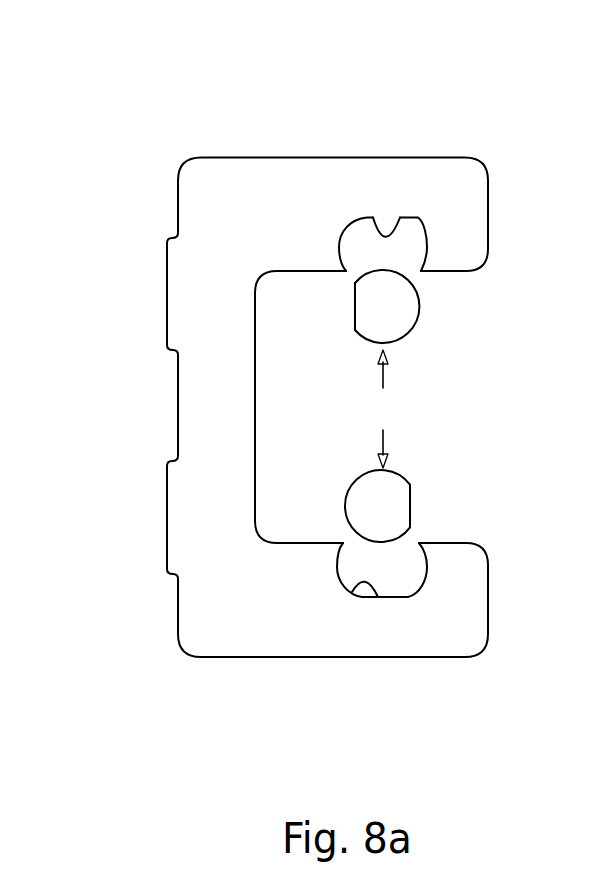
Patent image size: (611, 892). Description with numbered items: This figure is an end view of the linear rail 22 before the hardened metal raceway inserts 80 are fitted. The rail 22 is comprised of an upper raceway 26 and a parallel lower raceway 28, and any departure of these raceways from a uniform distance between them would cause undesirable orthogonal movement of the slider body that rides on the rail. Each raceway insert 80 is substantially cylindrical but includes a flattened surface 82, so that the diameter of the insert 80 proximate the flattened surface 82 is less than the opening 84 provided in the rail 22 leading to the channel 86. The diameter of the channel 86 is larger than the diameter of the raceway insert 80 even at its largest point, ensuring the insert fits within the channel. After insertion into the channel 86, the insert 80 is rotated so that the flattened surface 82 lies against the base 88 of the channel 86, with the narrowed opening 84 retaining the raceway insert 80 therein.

The linear rail 22 is at (198, 329).
The upper raceway 26 is at (260, 174).
The lower raceway 28 is at (258, 618).
The raceway insert 80 is at (400, 317).
The flattened surface 82 is at (355, 312).
The opening 84 is at (407, 265).
The channel 86 is at (400, 250).
The base of channel 88 is at (402, 222).